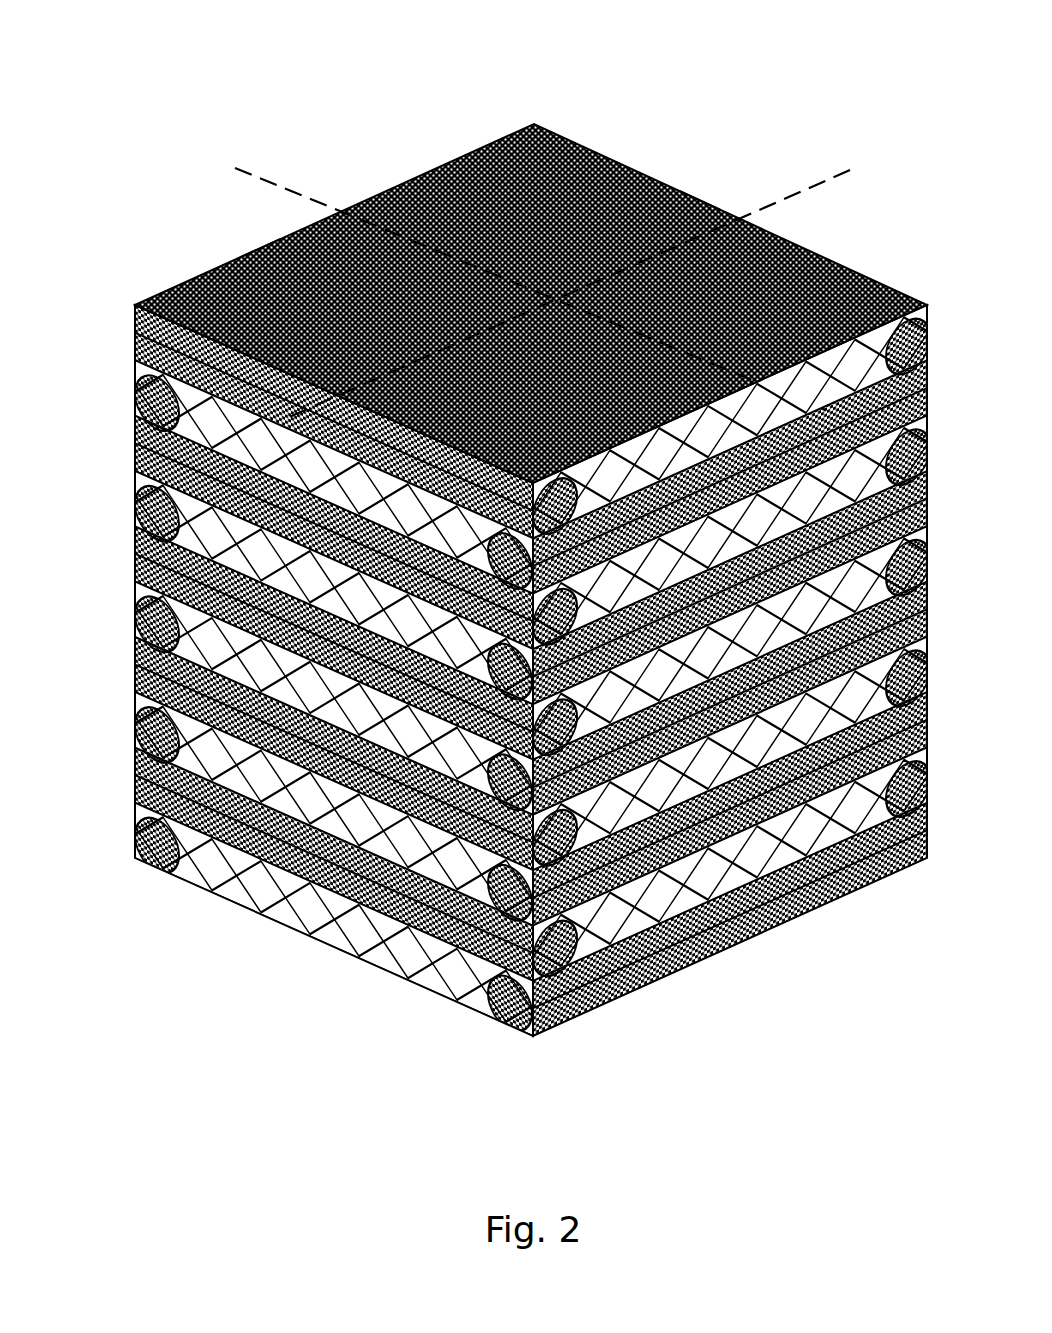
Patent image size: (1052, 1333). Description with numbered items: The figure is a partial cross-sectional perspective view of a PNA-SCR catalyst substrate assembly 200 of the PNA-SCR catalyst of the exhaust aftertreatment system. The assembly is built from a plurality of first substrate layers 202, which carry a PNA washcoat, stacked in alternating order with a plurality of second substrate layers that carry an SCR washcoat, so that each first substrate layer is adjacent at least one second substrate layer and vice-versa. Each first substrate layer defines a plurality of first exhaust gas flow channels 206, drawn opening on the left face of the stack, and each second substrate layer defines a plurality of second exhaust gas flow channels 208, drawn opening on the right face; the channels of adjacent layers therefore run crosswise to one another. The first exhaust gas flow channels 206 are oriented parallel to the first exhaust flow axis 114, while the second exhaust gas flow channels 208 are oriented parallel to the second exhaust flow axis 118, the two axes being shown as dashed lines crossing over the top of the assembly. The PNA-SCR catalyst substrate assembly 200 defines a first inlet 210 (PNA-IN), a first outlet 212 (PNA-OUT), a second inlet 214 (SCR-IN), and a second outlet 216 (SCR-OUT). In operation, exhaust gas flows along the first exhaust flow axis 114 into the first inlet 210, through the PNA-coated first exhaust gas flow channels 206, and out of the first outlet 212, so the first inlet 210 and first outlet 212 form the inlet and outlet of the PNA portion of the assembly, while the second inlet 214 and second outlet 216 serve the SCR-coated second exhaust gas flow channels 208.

The PNA-SCR catalyst substrate assembly 200 is at (317, 100).
The second exhaust flow axis 118 is at (535, 274).
The first exhaust flow axis 114 is at (585, 294).
The second outlet 216 is at (257, 248).
The first outlet 212 is at (697, 199).
The first substrate layers 202 is at (432, 977).
The first exhaust gas flow channels 206 is at (213, 872).
The first inlet 210 is at (337, 928).
The second exhaust gas flow channels 208 is at (652, 927).
The second inlet 214 is at (707, 885).